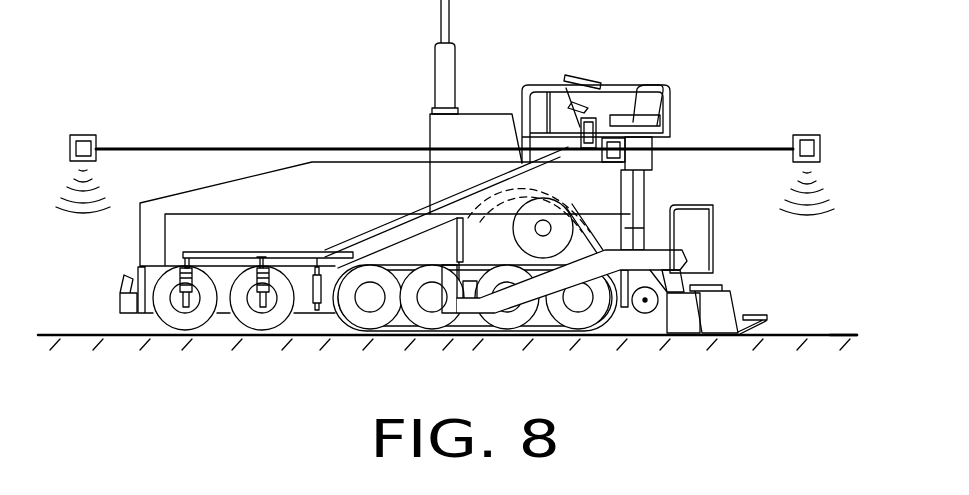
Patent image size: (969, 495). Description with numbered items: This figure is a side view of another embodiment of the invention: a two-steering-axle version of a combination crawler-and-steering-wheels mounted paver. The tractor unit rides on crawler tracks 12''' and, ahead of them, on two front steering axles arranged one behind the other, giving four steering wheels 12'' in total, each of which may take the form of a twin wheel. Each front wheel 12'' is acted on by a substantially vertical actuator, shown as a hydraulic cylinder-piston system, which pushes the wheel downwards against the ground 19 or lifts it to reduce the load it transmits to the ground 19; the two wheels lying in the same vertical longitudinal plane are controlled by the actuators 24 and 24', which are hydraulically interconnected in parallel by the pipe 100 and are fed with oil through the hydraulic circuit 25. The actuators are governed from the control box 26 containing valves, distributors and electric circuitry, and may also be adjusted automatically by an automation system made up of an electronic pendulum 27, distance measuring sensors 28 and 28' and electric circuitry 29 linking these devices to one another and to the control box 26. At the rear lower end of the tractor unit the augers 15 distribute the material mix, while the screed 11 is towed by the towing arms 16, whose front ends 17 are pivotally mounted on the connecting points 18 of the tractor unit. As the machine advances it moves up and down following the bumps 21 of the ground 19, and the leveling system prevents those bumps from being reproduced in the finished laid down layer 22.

The screed 11 is at (738, 378).
The steering wheel 12'' is at (223, 337).
The crawler track 12''' is at (475, 336).
The auger 15 is at (633, 297).
The towing arm 16 is at (596, 330).
The towing-arm front end 17 is at (467, 330).
The connecting point 18 is at (443, 330).
The ground 19 is at (52, 340).
The bump 21 is at (648, 335).
The laid down layer 22 is at (856, 336).
The actuator 24 is at (141, 338).
The actuator 24' is at (291, 338).
The hydraulic circuit 25 is at (375, 228).
The control box 26 is at (577, 108).
The electronic pendulum 27 is at (614, 140).
The distance measuring sensor 28 is at (808, 152).
The distance measuring sensor 28' is at (80, 145).
The electric circuitry 29 is at (130, 144).
The pipe 100 is at (210, 248).